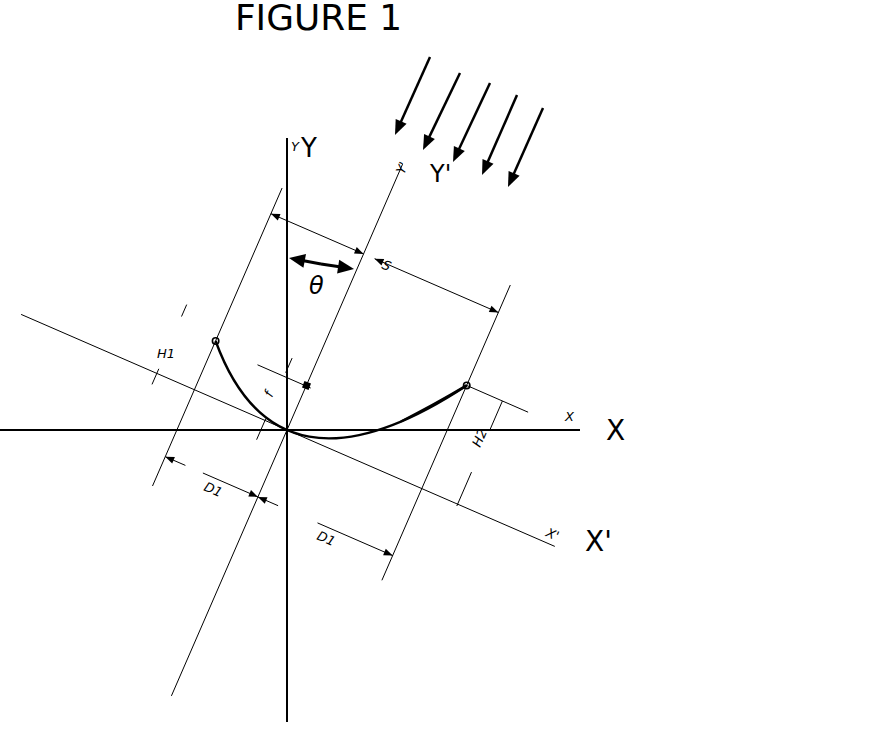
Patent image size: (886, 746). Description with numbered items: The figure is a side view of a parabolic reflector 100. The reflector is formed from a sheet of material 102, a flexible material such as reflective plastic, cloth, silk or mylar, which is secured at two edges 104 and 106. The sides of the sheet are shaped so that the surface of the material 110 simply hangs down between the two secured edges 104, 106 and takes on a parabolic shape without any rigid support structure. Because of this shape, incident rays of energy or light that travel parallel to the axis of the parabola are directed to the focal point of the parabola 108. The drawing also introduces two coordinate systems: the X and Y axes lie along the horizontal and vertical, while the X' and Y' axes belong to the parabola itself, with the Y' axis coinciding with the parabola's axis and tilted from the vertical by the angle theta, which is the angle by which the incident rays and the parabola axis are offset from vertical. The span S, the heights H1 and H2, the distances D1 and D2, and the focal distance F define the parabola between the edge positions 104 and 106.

The parabolic reflector 100 is at (536, 207).
The sheet of material 102 is at (440, 370).
The first edge 104 is at (200, 335).
The second edge 106 is at (484, 387).
The focal point of the parabola 108 is at (321, 376).
The surface of the material 110 is at (449, 418).